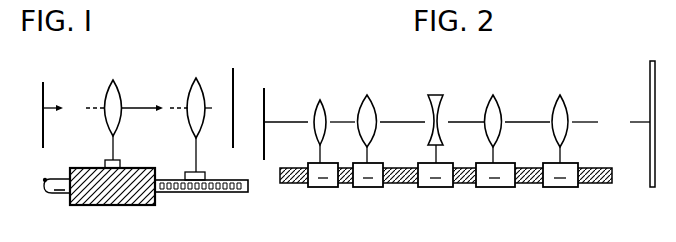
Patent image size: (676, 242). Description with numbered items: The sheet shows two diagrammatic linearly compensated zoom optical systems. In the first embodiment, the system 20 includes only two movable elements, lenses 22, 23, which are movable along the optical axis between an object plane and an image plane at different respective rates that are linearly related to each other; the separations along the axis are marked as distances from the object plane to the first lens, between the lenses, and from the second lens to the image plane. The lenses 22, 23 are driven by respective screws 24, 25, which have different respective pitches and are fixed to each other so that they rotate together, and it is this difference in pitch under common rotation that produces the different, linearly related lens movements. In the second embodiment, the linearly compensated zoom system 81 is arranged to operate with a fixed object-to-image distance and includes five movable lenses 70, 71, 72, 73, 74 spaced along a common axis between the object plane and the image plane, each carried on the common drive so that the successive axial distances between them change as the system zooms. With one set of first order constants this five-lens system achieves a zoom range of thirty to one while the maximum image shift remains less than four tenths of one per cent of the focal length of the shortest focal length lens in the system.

In FIG. 1, the zoom optical system 20 is at (124, 49).
In FIG. 1, the lens 22 is at (111, 82).
In FIG. 1, the lens 23 is at (189, 93).
In FIG. 1, the screw 24 is at (140, 204).
In FIG. 1, the screw 25 is at (230, 195).
In FIG. 2, the five-lens zoom optical system 81 is at (416, 70).
In FIG. 2, the movable lens 70 is at (316, 112).
In FIG. 2, the movable lens 71 is at (371, 105).
In FIG. 2, the movable lens 72 is at (440, 113).
In FIG. 2, the movable lens 73 is at (497, 105).
In FIG. 2, the movable lens 74 is at (565, 105).